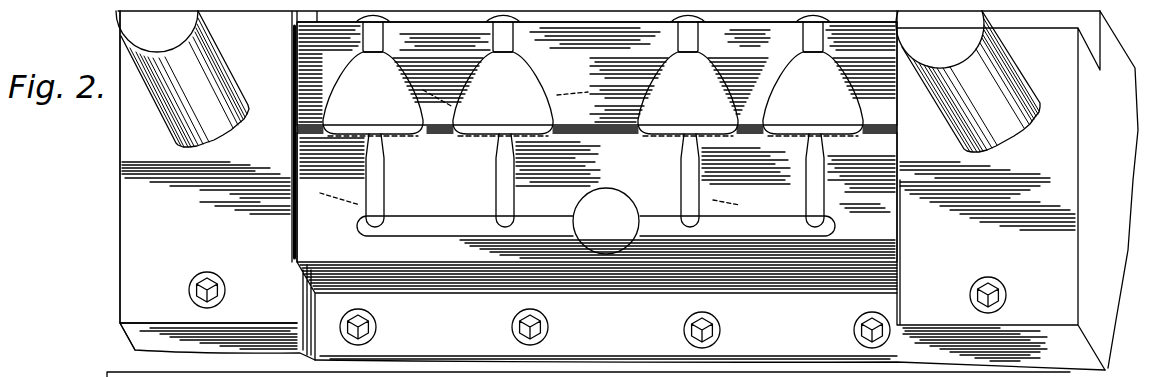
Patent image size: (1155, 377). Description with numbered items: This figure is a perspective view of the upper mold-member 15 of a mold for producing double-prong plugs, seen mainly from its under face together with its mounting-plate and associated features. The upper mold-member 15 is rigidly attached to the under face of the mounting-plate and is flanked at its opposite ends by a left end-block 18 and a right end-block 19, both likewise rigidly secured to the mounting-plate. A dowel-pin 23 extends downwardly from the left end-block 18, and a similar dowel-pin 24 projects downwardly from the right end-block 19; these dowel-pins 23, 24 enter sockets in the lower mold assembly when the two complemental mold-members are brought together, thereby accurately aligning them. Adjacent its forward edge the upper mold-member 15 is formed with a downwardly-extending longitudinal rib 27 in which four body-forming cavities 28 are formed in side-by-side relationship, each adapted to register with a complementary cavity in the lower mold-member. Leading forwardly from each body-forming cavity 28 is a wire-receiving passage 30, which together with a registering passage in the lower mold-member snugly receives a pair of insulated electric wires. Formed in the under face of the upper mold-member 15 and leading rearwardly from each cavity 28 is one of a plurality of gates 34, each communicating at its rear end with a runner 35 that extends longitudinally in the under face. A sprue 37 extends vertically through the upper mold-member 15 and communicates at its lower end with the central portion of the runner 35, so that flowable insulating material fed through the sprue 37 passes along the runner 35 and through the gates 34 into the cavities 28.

The upper mold-member 15 is at (300, 245).
The left end-block 18 is at (132, 215).
The right end-block 19 is at (1063, 168).
The dowel-pin 23 is at (125, 30).
The dowel-pin 24 is at (990, 56).
The longitudinal rib 27 is at (300, 85).
The body-forming cavities 28 is at (382, 103).
The wire-receiving passage 30 is at (378, 42).
The gates 34 is at (384, 193).
The runner 35 is at (447, 223).
The sprue 37 is at (615, 212).